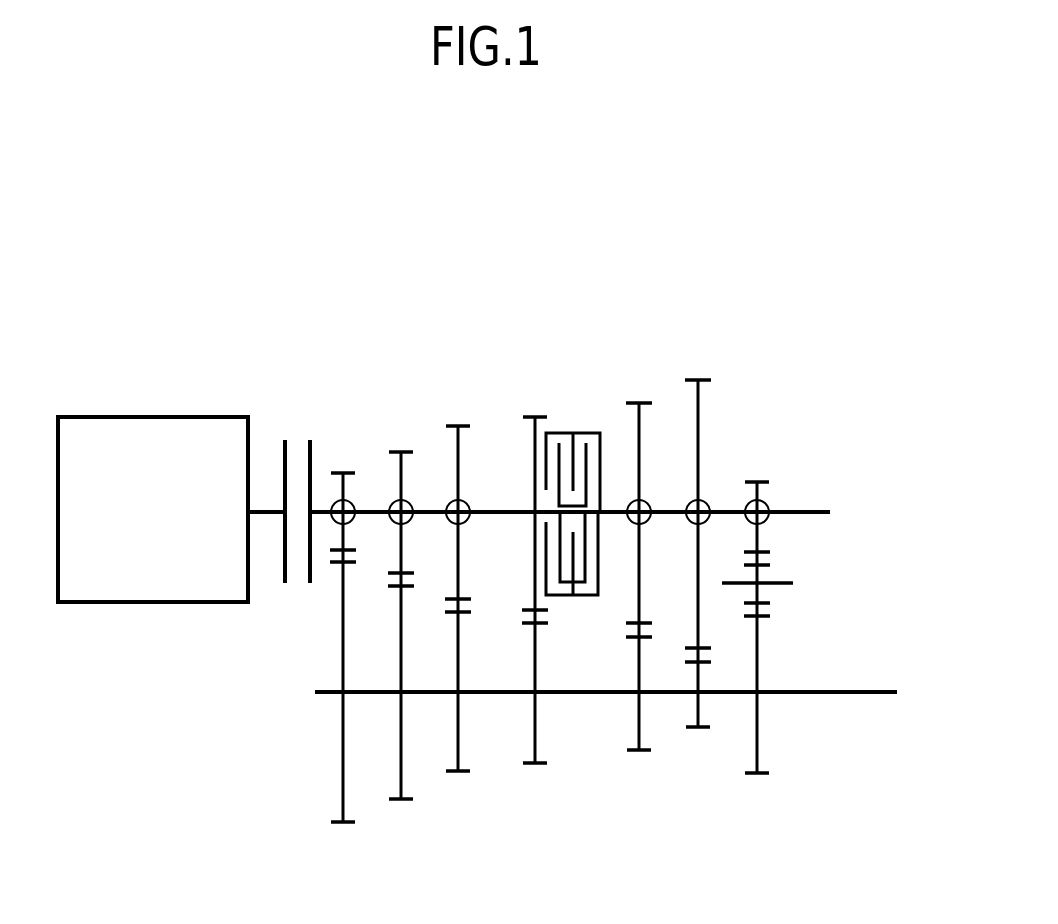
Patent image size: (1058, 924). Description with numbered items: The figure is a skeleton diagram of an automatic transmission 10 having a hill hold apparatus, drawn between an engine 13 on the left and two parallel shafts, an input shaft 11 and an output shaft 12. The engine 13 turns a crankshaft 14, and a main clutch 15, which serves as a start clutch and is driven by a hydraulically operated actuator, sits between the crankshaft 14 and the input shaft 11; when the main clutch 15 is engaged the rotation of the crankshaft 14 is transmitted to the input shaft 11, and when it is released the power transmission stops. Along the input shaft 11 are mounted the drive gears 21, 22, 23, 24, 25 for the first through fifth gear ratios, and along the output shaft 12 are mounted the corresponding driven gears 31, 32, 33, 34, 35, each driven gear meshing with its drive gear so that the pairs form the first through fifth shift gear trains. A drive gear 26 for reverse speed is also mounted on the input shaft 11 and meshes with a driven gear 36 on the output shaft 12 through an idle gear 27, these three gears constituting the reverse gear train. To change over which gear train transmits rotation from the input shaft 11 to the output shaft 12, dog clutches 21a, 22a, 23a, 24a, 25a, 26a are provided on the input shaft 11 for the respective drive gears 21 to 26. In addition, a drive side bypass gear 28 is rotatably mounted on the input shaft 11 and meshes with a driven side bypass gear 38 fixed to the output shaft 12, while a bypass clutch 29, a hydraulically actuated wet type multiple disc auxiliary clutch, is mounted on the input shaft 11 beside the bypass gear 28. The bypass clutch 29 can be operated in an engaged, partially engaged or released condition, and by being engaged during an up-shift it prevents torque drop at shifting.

The automatic transmission 10 is at (420, 342).
The input shaft 11 is at (820, 512).
The output shaft 12 is at (875, 690).
The engine 13 is at (158, 603).
The crankshaft 14 is at (265, 510).
The main clutch 15 is at (300, 443).
The drive gear for 1st gear ratio 21 is at (342, 462).
The dog clutch 21a is at (333, 520).
The drive gear for 2nd gear ratio 22 is at (400, 447).
The dog clutch 22a is at (392, 520).
The drive gear for 3rd gear ratio 23 is at (456, 420).
The dog clutch 23a is at (468, 498).
The drive gear for 4th gear ratio 24 is at (637, 398).
The dog clutch 24a is at (650, 507).
The drive gear for 5th gear ratio 25 is at (697, 375).
The dog clutch 25a is at (710, 507).
The drive gear for reverse speed 26 is at (763, 477).
The dog clutch 26a is at (770, 505).
The idle gear 27 is at (760, 572).
The drive side bypass gear 28 is at (536, 410).
The bypass clutch 29 is at (583, 430).
The driven gear for 1st gear ratio 31 is at (343, 827).
The driven gear for 2nd gear ratio 32 is at (400, 802).
The driven gear for 3rd gear ratio 33 is at (457, 773).
The driven gear for 4th gear ratio 34 is at (640, 753).
The driven gear for 5th gear ratio 35 is at (698, 730).
The driven gear for reverse speed 36 is at (757, 730).
The driven side bypass gear 38 is at (533, 767).